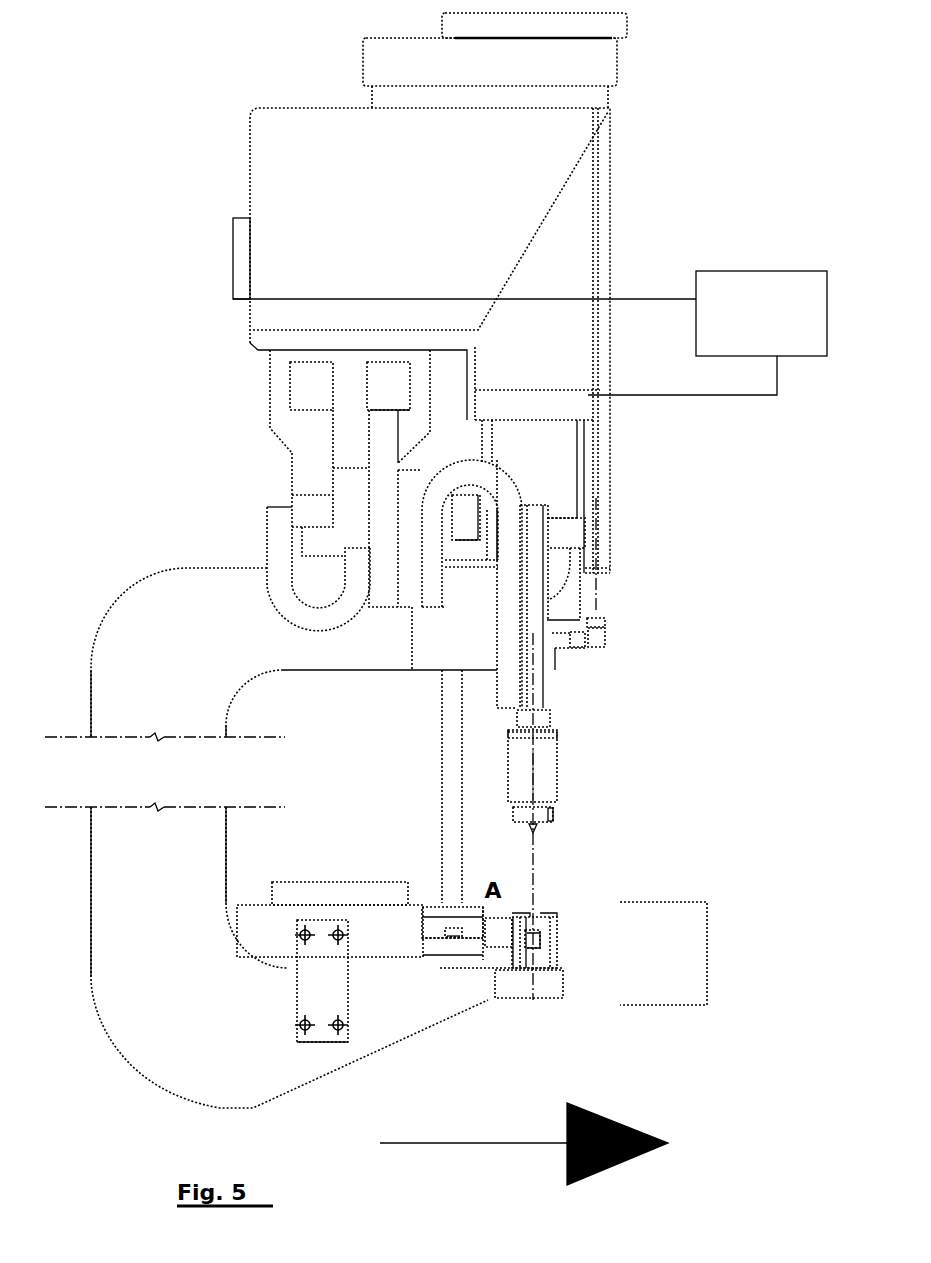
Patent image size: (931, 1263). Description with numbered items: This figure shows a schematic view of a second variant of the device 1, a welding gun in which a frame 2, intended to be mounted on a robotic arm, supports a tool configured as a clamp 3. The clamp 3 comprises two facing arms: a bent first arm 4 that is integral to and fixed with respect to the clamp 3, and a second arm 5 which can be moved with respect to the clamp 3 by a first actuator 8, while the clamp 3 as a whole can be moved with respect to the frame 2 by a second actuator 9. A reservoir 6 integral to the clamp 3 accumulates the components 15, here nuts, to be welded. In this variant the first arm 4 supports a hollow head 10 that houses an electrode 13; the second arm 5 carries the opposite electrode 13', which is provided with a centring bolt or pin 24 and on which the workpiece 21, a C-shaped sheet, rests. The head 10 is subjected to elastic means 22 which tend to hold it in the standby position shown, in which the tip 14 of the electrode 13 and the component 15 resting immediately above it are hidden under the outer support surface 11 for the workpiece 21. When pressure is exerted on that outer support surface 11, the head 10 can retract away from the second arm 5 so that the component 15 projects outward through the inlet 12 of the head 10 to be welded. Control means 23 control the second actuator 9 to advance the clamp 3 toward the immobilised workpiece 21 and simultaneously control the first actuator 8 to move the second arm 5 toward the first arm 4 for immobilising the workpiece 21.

The device 1 is at (190, 272).
The frame 2 is at (363, 77).
The clamp 3 is at (232, 398).
The first arm 4 is at (540, 990).
The second arm 5 is at (570, 683).
The reservoir 6 is at (262, 908).
The first actuator 8 is at (560, 460).
The second actuator 9 is at (240, 176).
The hollow head 10 is at (573, 913).
The outer support surface 11 is at (550, 913).
The inlet 12 is at (527, 913).
The electrode 13 is at (550, 1005).
The electrode 13' is at (576, 808).
The tip 14 is at (543, 933).
The component 15 is at (540, 930).
The workpiece 21 is at (703, 918).
The elastic means 22 is at (513, 953).
The control means 23 is at (707, 333).
The centring bolt or pin 24 is at (535, 833).